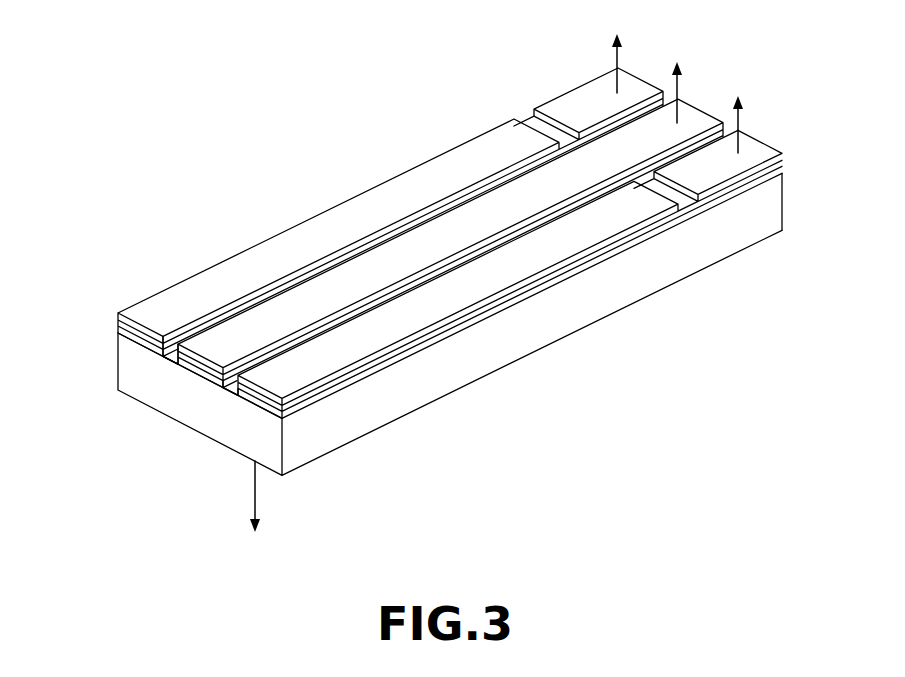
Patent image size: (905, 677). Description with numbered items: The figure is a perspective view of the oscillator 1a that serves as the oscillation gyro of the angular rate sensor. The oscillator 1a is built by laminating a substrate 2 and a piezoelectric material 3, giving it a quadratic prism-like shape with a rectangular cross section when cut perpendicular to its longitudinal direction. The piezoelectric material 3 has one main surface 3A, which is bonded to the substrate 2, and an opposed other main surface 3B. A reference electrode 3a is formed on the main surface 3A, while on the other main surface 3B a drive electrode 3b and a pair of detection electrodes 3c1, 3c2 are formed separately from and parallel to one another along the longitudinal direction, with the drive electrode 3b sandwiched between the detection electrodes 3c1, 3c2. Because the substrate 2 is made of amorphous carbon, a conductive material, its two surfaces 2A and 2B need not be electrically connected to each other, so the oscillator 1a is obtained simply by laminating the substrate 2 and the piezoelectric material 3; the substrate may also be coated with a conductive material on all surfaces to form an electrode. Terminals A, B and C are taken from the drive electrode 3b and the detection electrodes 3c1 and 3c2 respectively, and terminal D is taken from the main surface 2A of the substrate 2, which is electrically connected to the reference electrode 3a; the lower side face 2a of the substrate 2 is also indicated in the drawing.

The oscillator 1a is at (527, 428).
The substrate 2 is at (487, 328).
The side surface of substrate 2a is at (437, 399).
The main surface of substrate 2A is at (140, 403).
The surface of substrate 2B is at (228, 385).
The piezoelectric material 3 is at (449, 287).
The reference electrode 3a is at (183, 376).
The main surface of piezoelectric material 3A is at (190, 375).
The other main surface of piezoelectric material 3B is at (188, 348).
The drive electrode 3b is at (438, 240).
The detection electrode 3c1 is at (366, 212).
The detection electrode 3c2 is at (627, 215).